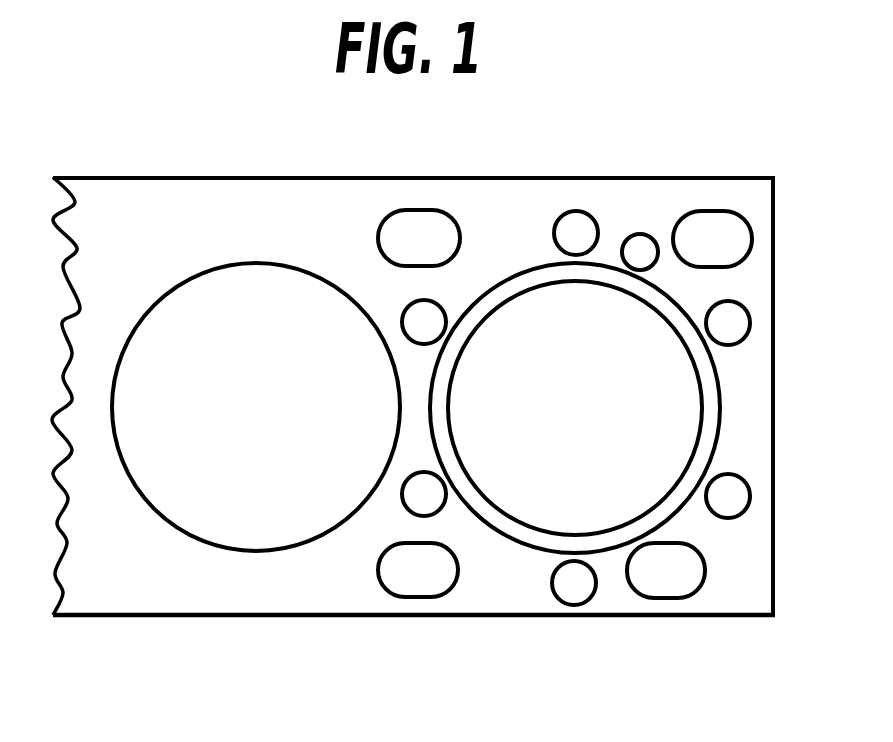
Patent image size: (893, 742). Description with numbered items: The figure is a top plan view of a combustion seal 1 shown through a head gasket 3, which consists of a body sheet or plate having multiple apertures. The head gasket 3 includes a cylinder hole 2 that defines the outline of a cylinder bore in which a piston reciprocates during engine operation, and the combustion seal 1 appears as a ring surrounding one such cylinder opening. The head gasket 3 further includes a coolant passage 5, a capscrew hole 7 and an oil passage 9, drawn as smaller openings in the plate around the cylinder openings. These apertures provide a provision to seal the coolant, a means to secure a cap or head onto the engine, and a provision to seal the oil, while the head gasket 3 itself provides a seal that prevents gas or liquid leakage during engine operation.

The combustion seal 1 is at (692, 512).
The cylinder hole 2 is at (343, 278).
The head gasket 3 is at (226, 622).
The coolant passage 5 is at (440, 622).
The capscrew hole 7 is at (581, 208).
The oil passage 9 is at (654, 234).